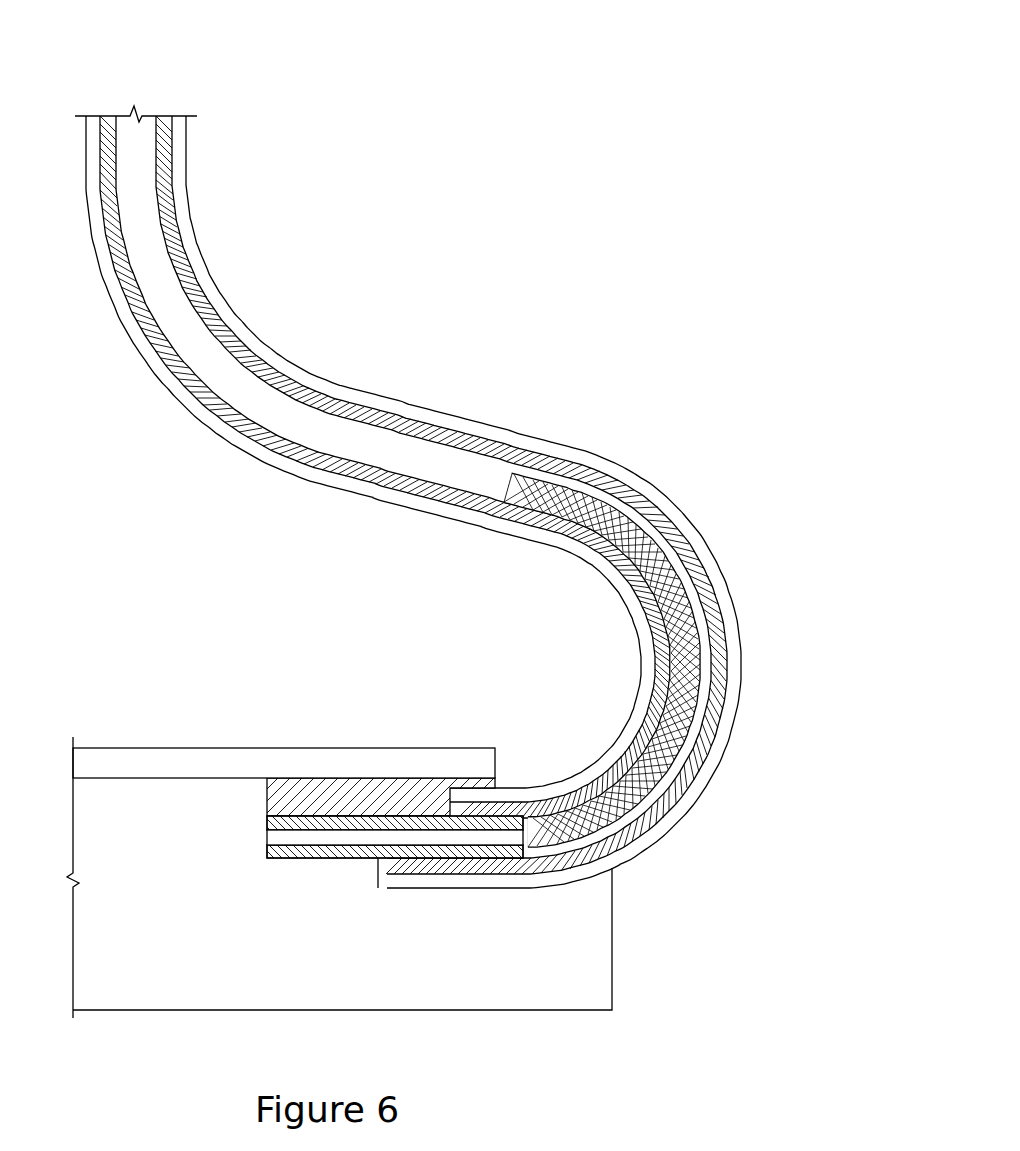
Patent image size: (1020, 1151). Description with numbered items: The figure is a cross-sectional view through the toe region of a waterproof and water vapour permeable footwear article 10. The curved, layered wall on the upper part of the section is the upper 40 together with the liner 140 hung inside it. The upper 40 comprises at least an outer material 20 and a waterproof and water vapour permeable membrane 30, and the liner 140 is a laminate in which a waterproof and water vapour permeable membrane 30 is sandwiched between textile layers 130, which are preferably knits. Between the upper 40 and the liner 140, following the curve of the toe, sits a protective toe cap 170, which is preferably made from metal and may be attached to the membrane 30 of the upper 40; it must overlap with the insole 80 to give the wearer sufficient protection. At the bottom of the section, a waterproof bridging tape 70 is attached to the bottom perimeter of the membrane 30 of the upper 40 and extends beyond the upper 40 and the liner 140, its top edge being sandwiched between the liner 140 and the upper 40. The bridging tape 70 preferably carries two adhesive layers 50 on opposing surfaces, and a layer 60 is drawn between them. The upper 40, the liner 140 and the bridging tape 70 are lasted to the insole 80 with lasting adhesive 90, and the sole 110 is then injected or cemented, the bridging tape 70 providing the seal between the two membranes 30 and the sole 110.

The footwear article 10 is at (436, 509).
The outer material 20 is at (369, 404).
The waterproof and water vapour permeable membrane 30 is at (405, 423).
The upper 40 is at (413, 495).
The adhesive layers 50 is at (280, 850).
The support plate 60 is at (335, 836).
The waterproof bridging tape 70 is at (386, 904).
The insole 80 is at (245, 763).
The lasting adhesive 90 is at (345, 793).
The sole 110 is at (583, 962).
The textile layers 130 is at (258, 470).
The liner 140 is at (413, 495).
The protective toe cap 170 is at (695, 638).